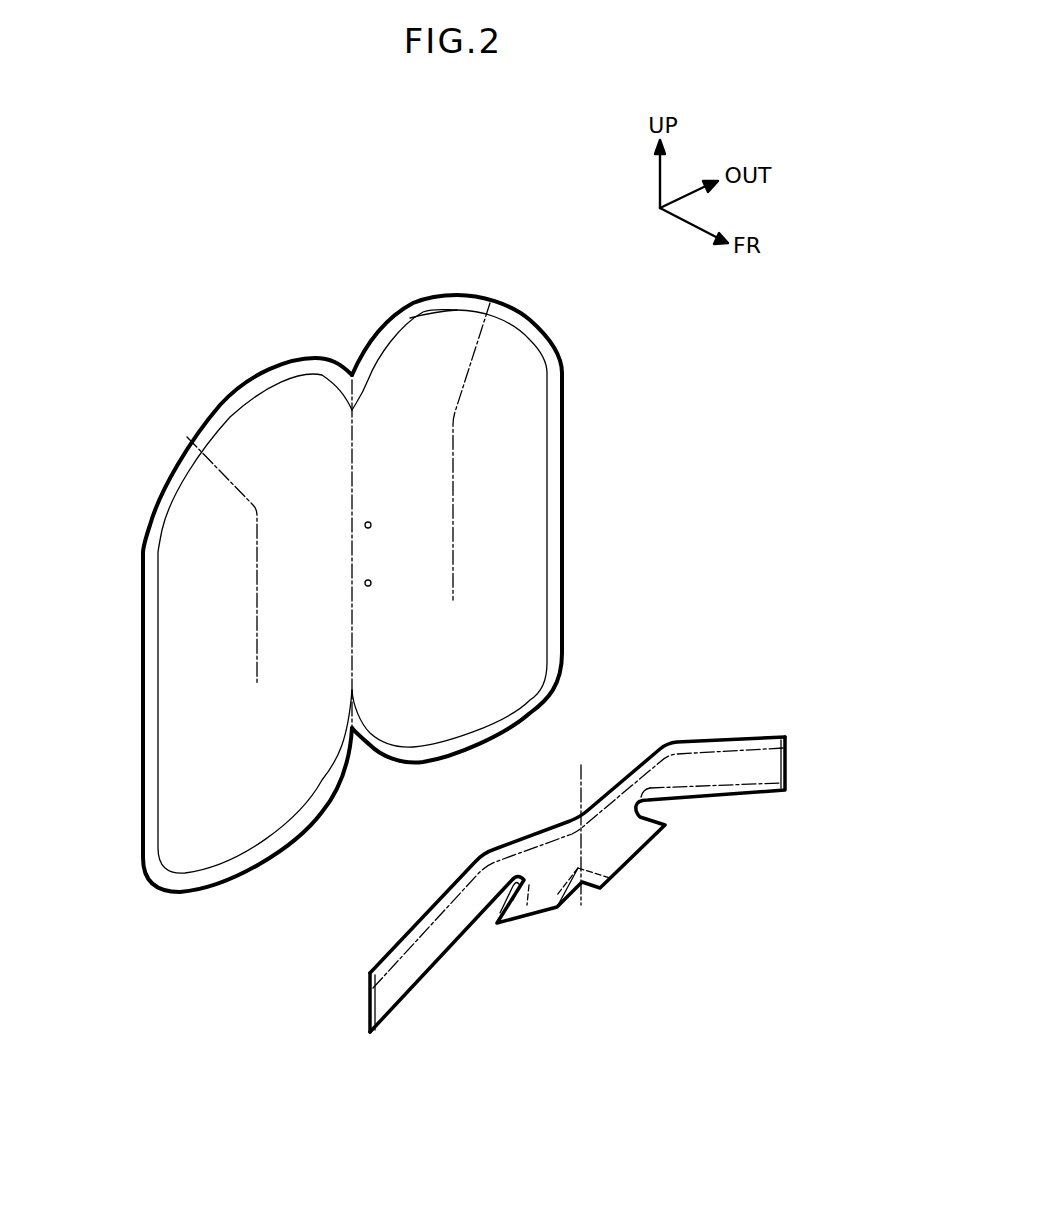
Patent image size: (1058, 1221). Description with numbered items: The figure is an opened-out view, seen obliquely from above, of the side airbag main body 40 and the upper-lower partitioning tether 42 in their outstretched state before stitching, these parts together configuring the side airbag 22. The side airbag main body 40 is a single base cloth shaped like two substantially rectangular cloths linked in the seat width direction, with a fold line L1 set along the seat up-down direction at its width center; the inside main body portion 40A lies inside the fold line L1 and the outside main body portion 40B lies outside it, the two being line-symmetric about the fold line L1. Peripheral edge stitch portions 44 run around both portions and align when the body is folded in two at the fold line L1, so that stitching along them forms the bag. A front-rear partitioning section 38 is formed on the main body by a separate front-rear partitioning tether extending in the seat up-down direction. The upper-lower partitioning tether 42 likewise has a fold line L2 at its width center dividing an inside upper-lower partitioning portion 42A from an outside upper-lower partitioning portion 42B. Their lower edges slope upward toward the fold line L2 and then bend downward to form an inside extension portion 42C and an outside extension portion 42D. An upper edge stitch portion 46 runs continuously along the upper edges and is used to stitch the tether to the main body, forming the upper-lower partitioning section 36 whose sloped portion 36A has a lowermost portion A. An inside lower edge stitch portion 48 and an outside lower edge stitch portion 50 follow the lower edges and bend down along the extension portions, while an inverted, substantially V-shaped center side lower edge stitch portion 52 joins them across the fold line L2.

The side airbag 22 is at (107, 1037).
The upper-lower partitioning section 36 is at (577, 878).
The sloped portion 36A is at (487, 848).
The front-rear partitioning section 38 is at (257, 617).
The side airbag main body 40 is at (210, 886).
The inside main body portion 40A is at (210, 732).
The outside main body portion 40B is at (502, 615).
The upper-lower partitioning tether 42 is at (368, 1002).
The inside upper-lower partitioning portion 42A is at (442, 935).
The outside upper-lower partitioning portion 42B is at (710, 777).
The inside extension portion 42C is at (540, 918).
The outside extension portion 42D is at (627, 868).
The peripheral edge stitch portions 44 is at (425, 312).
The upper edge stitch portion 46 is at (517, 845).
The inside lower edge stitch portion 48 is at (422, 976).
The outside lower edge stitch portion 50 is at (773, 800).
The center side lower edge stitch portion 52 is at (568, 905).
The lowermost portion A is at (580, 817).
The fold line L1 is at (352, 443).
The fold line L2 is at (582, 775).